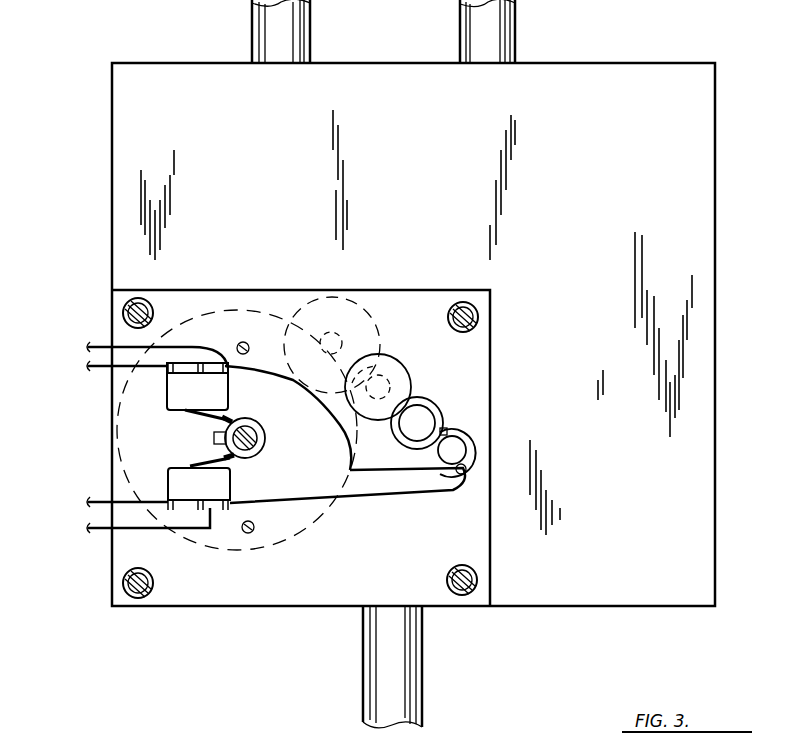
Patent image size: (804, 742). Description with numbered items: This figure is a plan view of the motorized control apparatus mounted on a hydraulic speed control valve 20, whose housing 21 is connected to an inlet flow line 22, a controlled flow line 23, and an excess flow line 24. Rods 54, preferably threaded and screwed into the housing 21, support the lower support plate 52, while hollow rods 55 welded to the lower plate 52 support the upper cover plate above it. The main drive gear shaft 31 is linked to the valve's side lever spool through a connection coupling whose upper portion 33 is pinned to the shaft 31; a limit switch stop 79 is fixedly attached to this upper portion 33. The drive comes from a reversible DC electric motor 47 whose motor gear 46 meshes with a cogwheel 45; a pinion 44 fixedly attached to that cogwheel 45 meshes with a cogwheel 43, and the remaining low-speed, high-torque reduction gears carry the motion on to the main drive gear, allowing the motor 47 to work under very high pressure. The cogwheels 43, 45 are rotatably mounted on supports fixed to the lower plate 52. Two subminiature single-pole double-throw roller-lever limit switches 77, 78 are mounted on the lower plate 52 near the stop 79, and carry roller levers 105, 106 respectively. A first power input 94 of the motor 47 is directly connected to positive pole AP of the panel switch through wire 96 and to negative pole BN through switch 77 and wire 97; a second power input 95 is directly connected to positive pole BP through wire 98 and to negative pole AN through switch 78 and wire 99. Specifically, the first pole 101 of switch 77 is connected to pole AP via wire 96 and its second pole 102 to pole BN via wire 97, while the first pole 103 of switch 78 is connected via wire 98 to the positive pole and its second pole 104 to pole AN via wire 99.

The hydraulic speed control valve 20 is at (128, 160).
The housing 21 is at (683, 553).
The inlet flow line 22 is at (422, 673).
The controlled flow line 23 is at (305, 42).
The excess flow line 24 is at (515, 40).
The main drive gear shaft 31 is at (258, 450).
The upper portion of connection coupling 33 is at (265, 438).
The cogwheel 43 is at (405, 372).
The pinion 44 is at (438, 408).
The cogwheel 45 is at (448, 424).
The motor gear 46 is at (465, 448).
The reversible DC electric motor 47 is at (478, 456).
The lower support plate 52 is at (460, 540).
The rods 54 is at (150, 305).
The rods 55 is at (150, 320).
The limit switch 77 is at (228, 480).
The limit switch 78 is at (222, 392).
The limit switch stop 79 is at (213, 440).
The first power input 94 is at (452, 437).
The second power input 95 is at (440, 492).
The wire 96 is at (100, 528).
The wire 97 is at (100, 505).
The wire 98 is at (100, 348).
The wire 99 is at (100, 368).
The first pole of switch 101 is at (225, 508).
The second pole of switch 102 is at (168, 508).
The first pole of switch 103 is at (238, 350).
The second pole of switch 104 is at (195, 352).
The roller lever 105 is at (185, 462).
The roller lever 106 is at (185, 415).